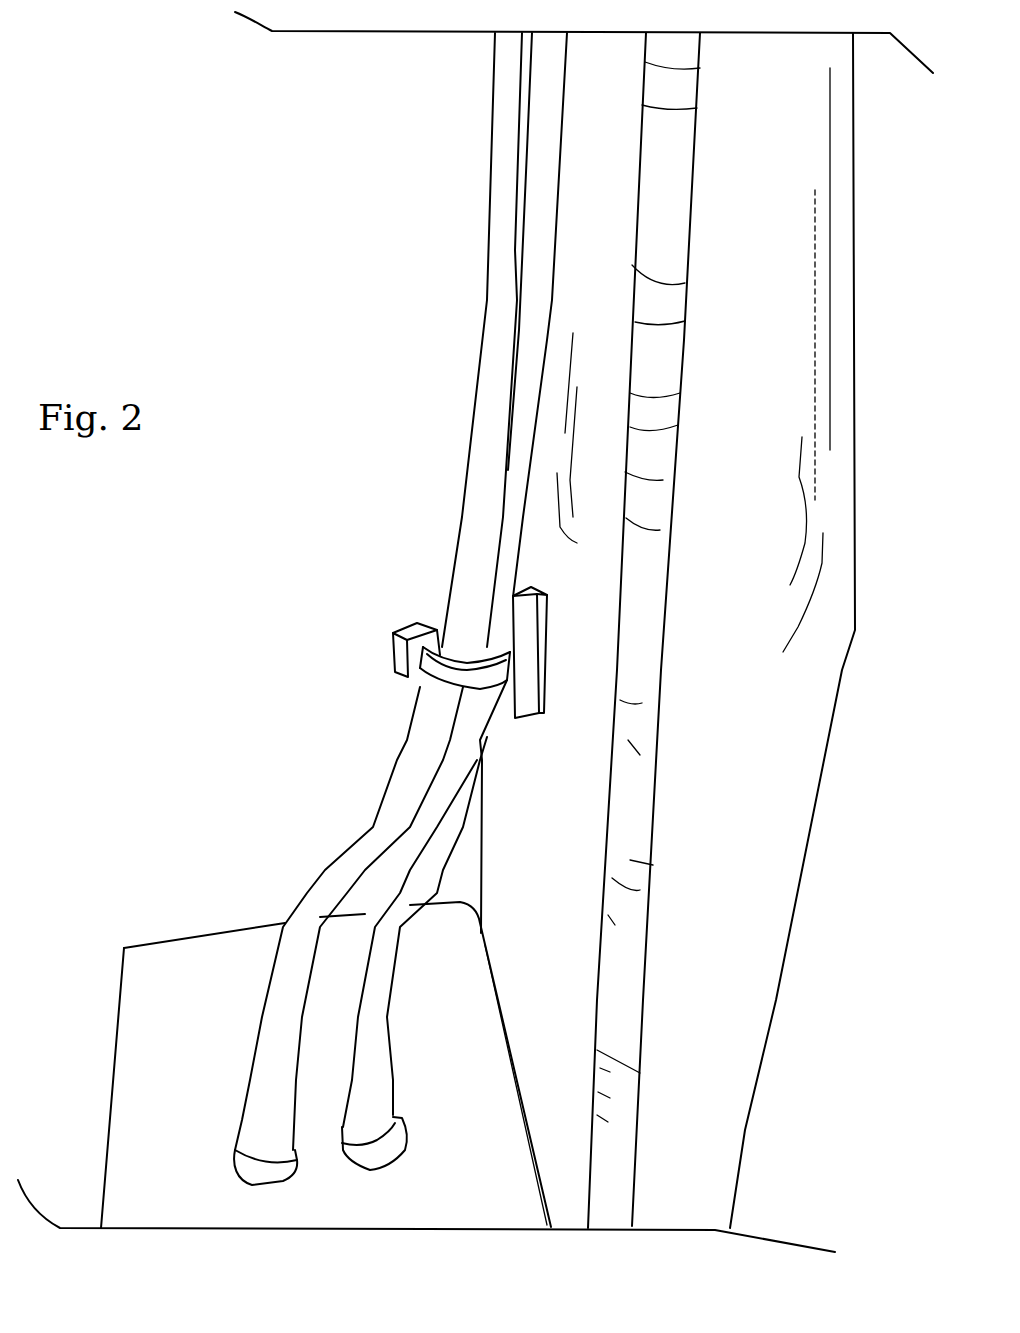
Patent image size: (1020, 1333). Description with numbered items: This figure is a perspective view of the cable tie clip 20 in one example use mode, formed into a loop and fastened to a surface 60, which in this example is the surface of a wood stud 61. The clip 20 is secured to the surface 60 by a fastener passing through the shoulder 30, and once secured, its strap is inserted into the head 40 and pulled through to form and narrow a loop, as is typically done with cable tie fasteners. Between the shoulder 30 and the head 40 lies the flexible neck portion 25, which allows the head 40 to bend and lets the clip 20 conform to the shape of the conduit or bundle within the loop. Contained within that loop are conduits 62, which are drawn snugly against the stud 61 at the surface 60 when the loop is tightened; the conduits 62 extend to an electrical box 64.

The cable tie clip 20 is at (453, 619).
The neck portion 25 is at (472, 672).
The shoulder 30 is at (535, 615).
The head 40 is at (400, 647).
The surface 60 is at (580, 783).
The wood stud 61 is at (707, 840).
The conduit 62 is at (443, 787).
The electrical box 64 is at (181, 968).